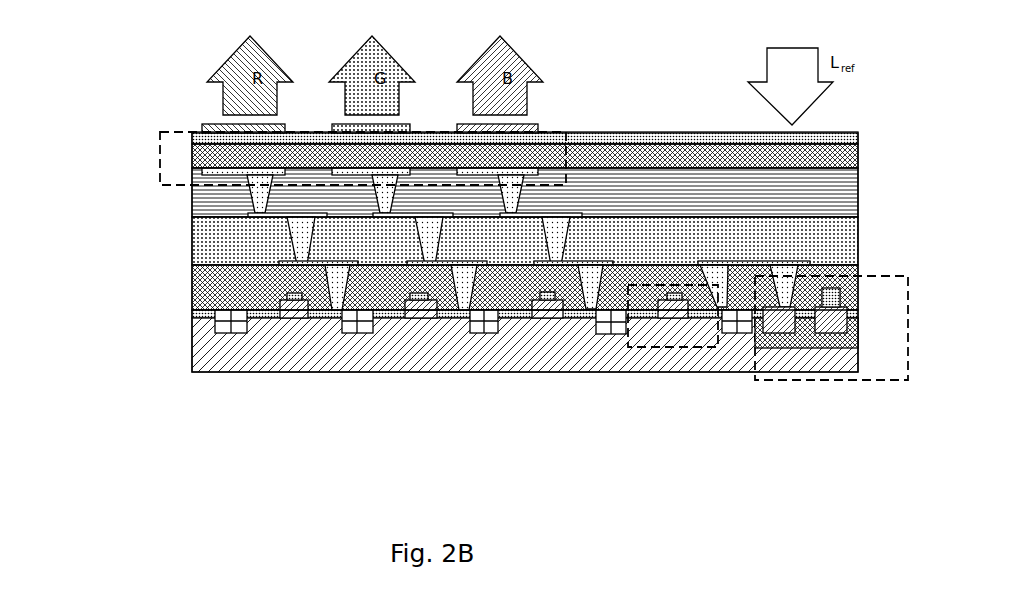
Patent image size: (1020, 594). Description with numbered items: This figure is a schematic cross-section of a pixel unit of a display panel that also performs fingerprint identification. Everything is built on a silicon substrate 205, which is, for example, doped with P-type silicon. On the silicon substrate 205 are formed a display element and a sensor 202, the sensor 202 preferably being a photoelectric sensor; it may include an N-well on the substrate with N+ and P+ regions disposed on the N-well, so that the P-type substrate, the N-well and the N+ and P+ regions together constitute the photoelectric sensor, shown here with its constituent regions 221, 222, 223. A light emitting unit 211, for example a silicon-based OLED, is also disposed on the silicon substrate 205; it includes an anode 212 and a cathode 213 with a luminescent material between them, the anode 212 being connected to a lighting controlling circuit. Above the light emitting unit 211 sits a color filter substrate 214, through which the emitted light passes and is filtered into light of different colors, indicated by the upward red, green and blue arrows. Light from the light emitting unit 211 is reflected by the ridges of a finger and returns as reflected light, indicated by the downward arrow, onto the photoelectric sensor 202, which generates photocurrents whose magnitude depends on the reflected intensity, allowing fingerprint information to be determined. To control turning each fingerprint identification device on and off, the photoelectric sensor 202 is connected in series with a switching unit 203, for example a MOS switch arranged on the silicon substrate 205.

The sensor 202 is at (882, 380).
The switching unit 203 is at (665, 348).
The silicon substrate 205 is at (430, 358).
The light emitting unit 211 is at (565, 130).
The anode 212 is at (197, 177).
The cathode 213 is at (192, 144).
The color filter substrate 214 is at (205, 125).
The sensing electrode 221 is at (838, 318).
The photosensitive region 222 is at (752, 342).
The sensing electrode 223 is at (777, 333).